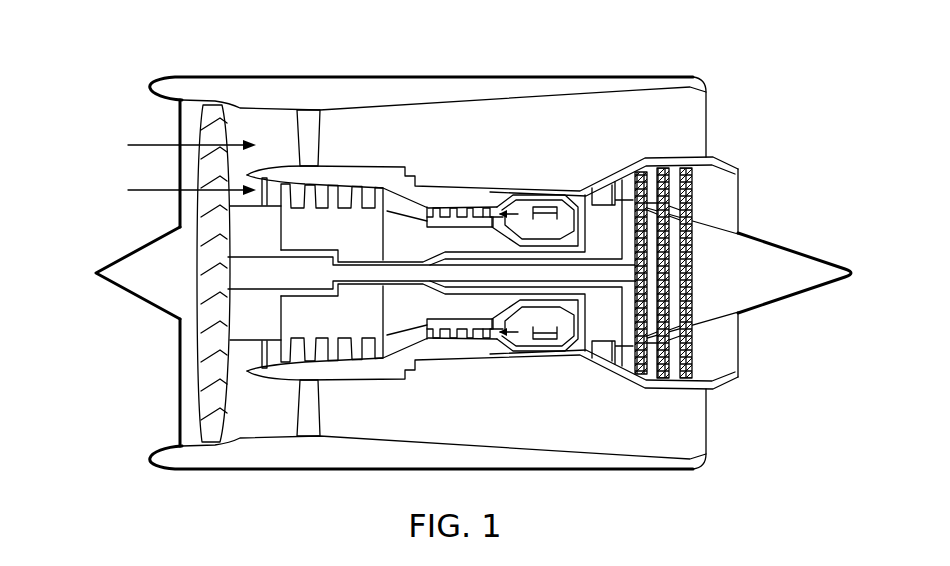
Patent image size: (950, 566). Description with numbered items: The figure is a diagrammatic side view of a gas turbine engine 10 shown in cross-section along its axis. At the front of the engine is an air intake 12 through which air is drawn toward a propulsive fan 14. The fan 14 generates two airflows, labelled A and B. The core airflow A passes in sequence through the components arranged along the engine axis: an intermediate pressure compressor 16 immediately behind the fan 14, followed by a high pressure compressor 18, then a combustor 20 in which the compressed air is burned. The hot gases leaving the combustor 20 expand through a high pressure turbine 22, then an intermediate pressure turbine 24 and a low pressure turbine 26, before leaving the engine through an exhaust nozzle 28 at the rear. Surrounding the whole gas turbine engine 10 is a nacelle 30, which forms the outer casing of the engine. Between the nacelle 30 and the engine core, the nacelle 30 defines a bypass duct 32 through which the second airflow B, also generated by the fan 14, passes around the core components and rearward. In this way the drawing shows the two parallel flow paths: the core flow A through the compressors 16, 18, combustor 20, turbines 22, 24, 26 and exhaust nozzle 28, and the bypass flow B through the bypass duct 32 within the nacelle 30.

The gas turbine engine 10 is at (120, 78).
The air intake 12 is at (190, 128).
The propulsive fan 14 is at (212, 112).
The intermediate pressure compressor 16 is at (318, 222).
The high pressure compressor 18 is at (457, 208).
The combustor 20 is at (545, 207).
The high pressure turbine 22 is at (582, 197).
The intermediate pressure turbine 24 is at (623, 193).
The low pressure turbine 26 is at (688, 183).
The exhaust nozzle 28 is at (723, 203).
The nacelle 30 is at (263, 105).
The bypass duct 32 is at (457, 138).